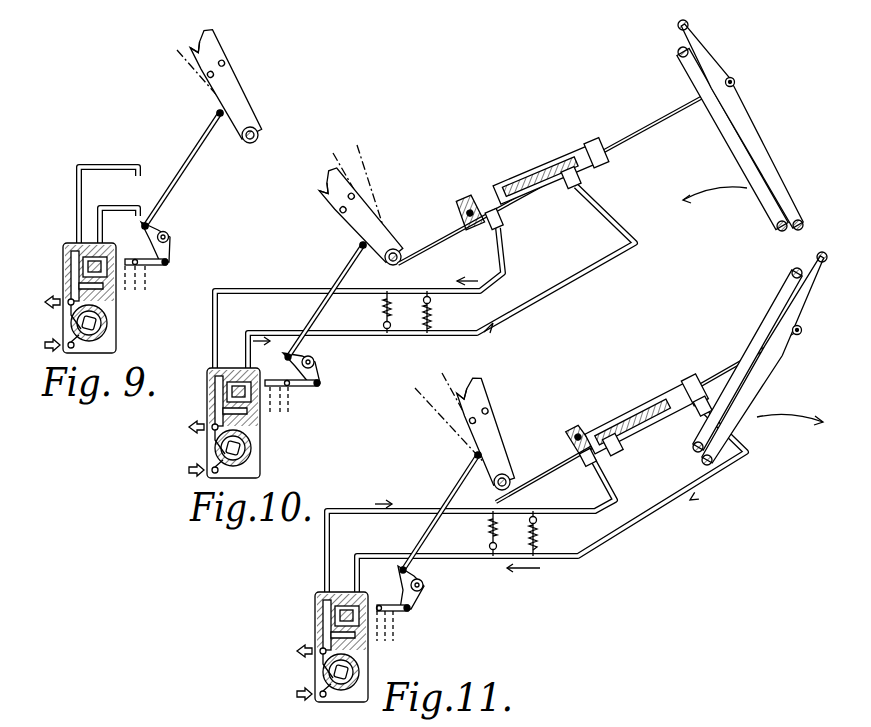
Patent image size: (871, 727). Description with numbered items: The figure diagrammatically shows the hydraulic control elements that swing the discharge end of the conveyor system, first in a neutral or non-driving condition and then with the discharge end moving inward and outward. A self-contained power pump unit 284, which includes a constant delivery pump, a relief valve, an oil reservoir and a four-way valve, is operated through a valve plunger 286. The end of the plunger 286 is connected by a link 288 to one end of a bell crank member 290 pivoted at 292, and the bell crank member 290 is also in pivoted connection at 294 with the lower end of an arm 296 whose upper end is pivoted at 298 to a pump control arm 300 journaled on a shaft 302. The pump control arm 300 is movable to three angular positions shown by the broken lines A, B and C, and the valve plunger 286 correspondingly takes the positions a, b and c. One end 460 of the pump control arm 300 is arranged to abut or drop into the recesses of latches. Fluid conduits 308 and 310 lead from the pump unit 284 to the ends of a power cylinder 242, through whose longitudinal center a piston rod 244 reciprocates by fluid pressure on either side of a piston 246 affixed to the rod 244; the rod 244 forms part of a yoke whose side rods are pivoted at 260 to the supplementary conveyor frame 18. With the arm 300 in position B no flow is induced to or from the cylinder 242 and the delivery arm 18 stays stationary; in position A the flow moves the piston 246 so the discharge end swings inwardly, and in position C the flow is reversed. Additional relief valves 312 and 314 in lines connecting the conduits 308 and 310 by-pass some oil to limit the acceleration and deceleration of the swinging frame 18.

In FIG. 10, the supplementary conveyor frame 18 is at (773, 140).
In FIG. 11, the supplementary conveyor frame 18 is at (767, 312).
In FIG. 10, the power cylinder 242 is at (545, 170).
In FIG. 11, the power cylinder 242 is at (653, 400).
In FIG. 10, the piston rod 244 is at (650, 125).
In FIG. 11, the piston rod 244 is at (537, 477).
In FIG. 10, the piston 246 is at (571, 187).
In FIG. 11, the piston 246 is at (612, 450).
In FIG. 10, the pivot 260 is at (736, 82).
In FIG. 11, the pivot 260 is at (801, 335).
In FIG. 9, the power pump unit 284 is at (119, 323).
In FIG. 10, the power pump unit 284 is at (266, 453).
In FIG. 11, the power pump unit 284 is at (312, 618).
In FIG. 9, the valve plunger 286 is at (142, 227).
In FIG. 10, the valve plunger 286 is at (292, 391).
In FIG. 11, the valve plunger 286 is at (379, 604).
In FIG. 9, the link 288 is at (152, 265).
In FIG. 10, the link 288 is at (309, 385).
In FIG. 11, the link 288 is at (409, 613).
In FIG. 9, the bell crank member 290 is at (169, 252).
In FIG. 10, the bell crank member 290 is at (321, 373).
In FIG. 11, the bell crank member 290 is at (413, 607).
In FIG. 9, the pivot 292 is at (168, 234).
In FIG. 10, the pivot 292 is at (313, 361).
In FIG. 11, the pivot 292 is at (424, 586).
In FIG. 9, the pivoted connection 294 is at (162, 168).
In FIG. 10, the pivoted connection 294 is at (277, 359).
In FIG. 11, the pivoted connection 294 is at (401, 568).
In FIG. 9, the arm 296 is at (182, 164).
In FIG. 10, the arm 296 is at (337, 274).
In FIG. 11, the arm 296 is at (452, 497).
In FIG. 9, the pivot 298 is at (217, 111).
In FIG. 10, the pivot 298 is at (363, 249).
In FIG. 11, the pivot 298 is at (475, 454).
In FIG. 9, the pump control arm 300 is at (226, 90).
In FIG. 10, the pump control arm 300 is at (333, 199).
In FIG. 11, the pump control arm 300 is at (489, 427).
In FIG. 9, the shaft 302 is at (258, 137).
In FIG. 10, the shaft 302 is at (399, 250).
In FIG. 11, the shaft 302 is at (498, 487).
In FIG. 9, the fluid conduit 308 is at (76, 222).
In FIG. 10, the fluid conduit 308 is at (280, 271).
In FIG. 11, the fluid conduit 308 is at (410, 511).
In FIG. 9, the fluid conduit 310 is at (129, 205).
In FIG. 10, the fluid conduit 310 is at (270, 329).
In FIG. 11, the fluid conduit 310 is at (623, 531).
In FIG. 10, the relief valve 312 is at (384, 317).
In FIG. 11, the relief valve 312 is at (490, 539).
In FIG. 10, the relief valve 314 is at (437, 312).
In FIG. 11, the relief valve 314 is at (540, 537).
In FIG. 9, the arm end 460 is at (203, 38).
In FIG. 10, the arm end 460 is at (323, 186).
In FIG. 11, the arm end 460 is at (482, 384).